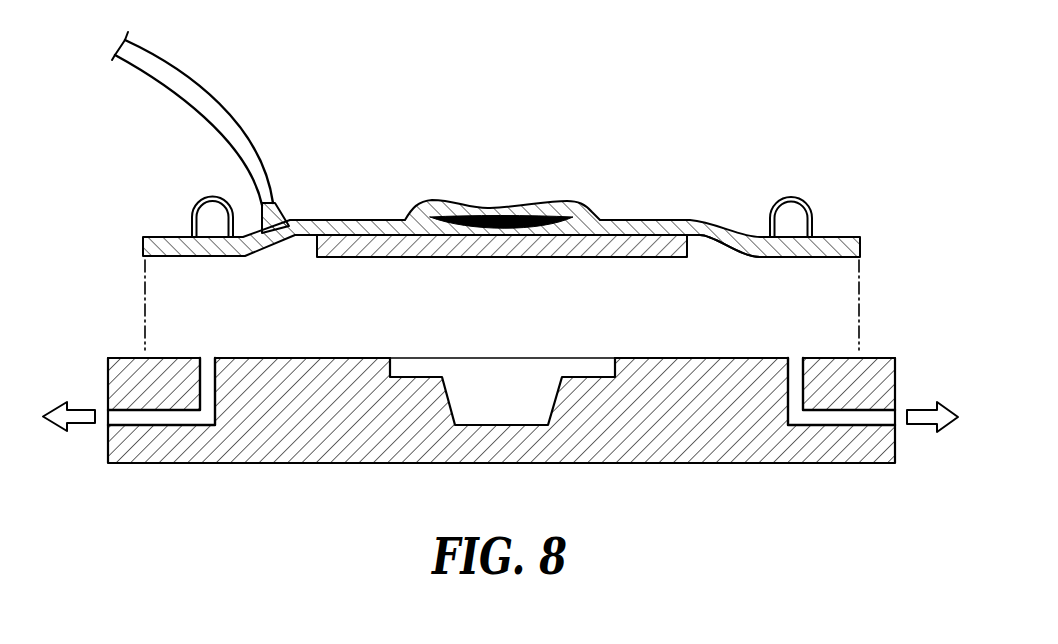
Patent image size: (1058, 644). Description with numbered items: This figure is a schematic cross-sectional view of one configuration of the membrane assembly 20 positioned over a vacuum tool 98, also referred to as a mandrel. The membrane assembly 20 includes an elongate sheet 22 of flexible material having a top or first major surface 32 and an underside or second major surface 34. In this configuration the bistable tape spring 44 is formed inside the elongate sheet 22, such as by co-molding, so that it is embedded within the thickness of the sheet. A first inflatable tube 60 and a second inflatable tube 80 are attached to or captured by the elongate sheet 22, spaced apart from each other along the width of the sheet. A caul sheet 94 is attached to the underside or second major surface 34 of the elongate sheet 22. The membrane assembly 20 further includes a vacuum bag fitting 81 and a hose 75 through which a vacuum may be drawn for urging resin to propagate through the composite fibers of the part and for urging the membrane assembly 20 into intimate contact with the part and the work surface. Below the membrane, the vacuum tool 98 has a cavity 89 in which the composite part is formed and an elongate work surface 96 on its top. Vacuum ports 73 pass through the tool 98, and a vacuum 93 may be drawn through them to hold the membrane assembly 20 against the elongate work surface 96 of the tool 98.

The membrane assembly 20 is at (772, 104).
The elongate sheet 22 is at (501, 193).
The first major surface 32 is at (641, 218).
The second major surface 34 is at (738, 251).
The bistable tape spring 44 is at (483, 222).
The first inflatable tube 60 is at (190, 220).
The vacuum ports 73 is at (158, 416).
The hose 75 is at (233, 118).
The second inflatable tube 80 is at (795, 198).
The vacuum bag fitting 81 is at (272, 217).
The cavity 89 is at (478, 377).
The vacuum 93 is at (83, 418).
The caul sheet 94 is at (511, 258).
The elongate work surface 96 is at (270, 357).
The vacuum tool 98 is at (592, 451).